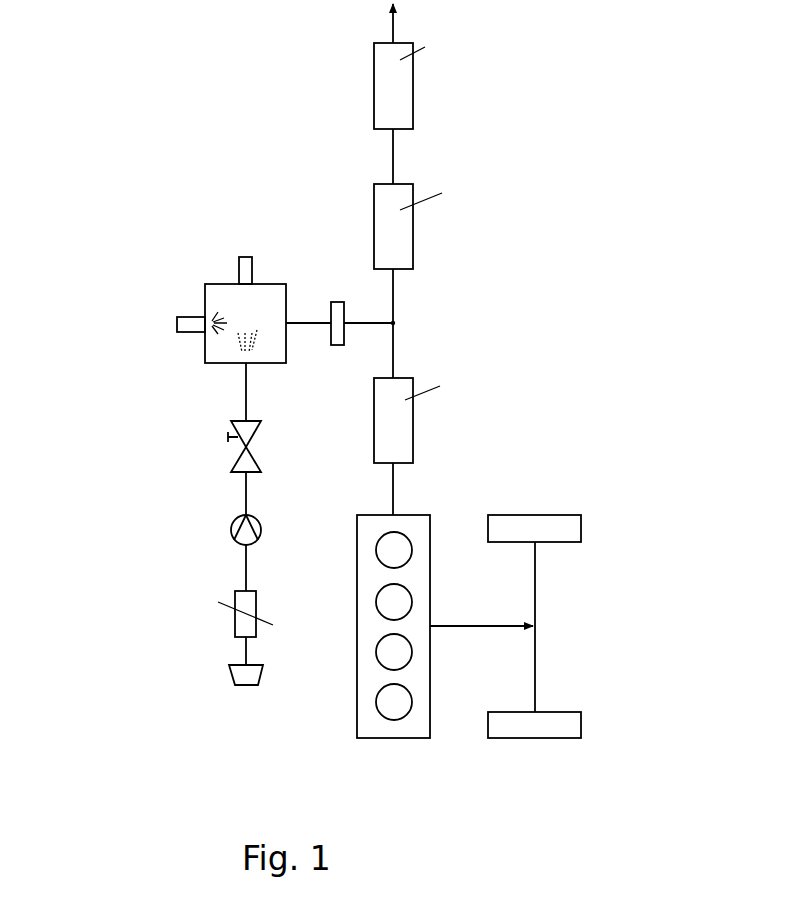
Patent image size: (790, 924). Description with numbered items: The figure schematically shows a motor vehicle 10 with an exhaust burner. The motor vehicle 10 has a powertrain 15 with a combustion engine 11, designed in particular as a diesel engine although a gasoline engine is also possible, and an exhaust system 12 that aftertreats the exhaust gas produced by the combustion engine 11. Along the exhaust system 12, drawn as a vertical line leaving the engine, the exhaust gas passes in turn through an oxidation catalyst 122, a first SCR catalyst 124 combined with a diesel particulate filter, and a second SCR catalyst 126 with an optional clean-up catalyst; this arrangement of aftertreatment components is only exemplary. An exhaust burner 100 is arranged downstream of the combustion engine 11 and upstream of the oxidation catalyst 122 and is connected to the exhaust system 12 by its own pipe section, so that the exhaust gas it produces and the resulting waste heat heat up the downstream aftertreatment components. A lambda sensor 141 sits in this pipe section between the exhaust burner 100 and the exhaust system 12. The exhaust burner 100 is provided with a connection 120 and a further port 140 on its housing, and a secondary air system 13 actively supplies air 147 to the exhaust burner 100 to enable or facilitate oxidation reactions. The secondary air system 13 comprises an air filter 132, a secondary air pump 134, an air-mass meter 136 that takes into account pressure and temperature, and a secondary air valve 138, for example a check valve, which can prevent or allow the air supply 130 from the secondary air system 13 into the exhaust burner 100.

The motor vehicle 10 is at (160, 138).
The combustion engine 11 is at (430, 577).
The exhaust system 12 is at (430, 441).
The secondary air system 13 is at (118, 752).
The powertrain 15 is at (602, 636).
The exhaust burner 100 is at (205, 292).
The module connection 120 is at (247, 255).
The oxidation catalyst 122 is at (413, 418).
The first SCR catalyst 124 is at (413, 226).
The second SCR catalyst 126 is at (413, 85).
The air supply 130 is at (243, 397).
The air filter 132 is at (230, 677).
The secondary air pump 134 is at (231, 532).
The air-mass meter 136 is at (235, 620).
The secondary air valve 138 is at (228, 437).
The air supply / nozzle 140 is at (177, 325).
The lambda sensor 141 is at (337, 300).
The air 147 is at (237, 340).